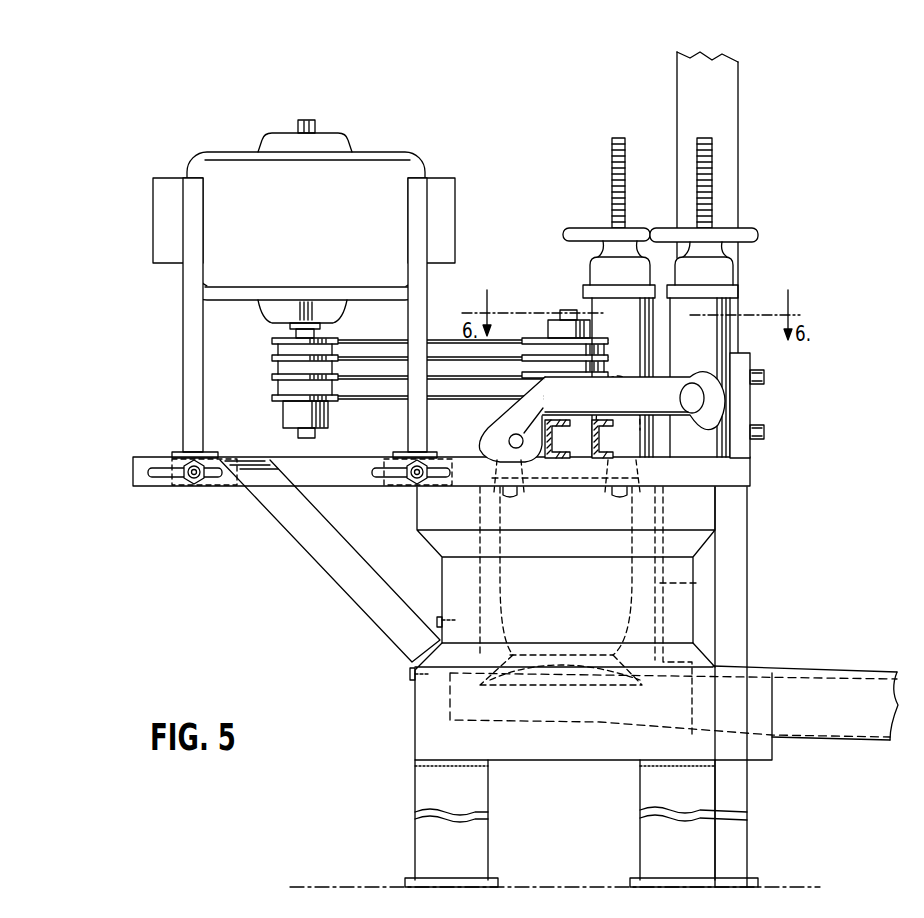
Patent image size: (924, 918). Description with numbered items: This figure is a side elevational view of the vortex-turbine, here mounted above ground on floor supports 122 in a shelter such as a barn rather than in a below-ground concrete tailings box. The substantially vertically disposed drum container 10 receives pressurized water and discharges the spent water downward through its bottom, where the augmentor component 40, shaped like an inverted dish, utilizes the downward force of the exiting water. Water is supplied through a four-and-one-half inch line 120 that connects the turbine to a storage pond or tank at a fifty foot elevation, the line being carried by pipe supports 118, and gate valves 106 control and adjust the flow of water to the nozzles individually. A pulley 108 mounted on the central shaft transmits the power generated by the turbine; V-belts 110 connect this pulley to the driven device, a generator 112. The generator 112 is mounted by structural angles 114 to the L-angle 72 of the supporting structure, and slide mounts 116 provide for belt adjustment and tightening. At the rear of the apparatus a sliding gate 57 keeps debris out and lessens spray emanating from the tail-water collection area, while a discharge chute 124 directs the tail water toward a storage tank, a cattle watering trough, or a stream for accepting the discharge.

The drum container 10 is at (500, 585).
The augmentor component 40 is at (472, 683).
The sliding gate 57 is at (662, 583).
The L-angle 72 is at (146, 460).
The gate valves 106 is at (583, 233).
The pulley 108 is at (540, 337).
The V-belts 110 is at (380, 347).
The generator 112 is at (377, 158).
The structural angles 114 is at (190, 333).
The slide mounts 116 is at (223, 486).
The pipe supports 118 is at (742, 452).
The line 120 is at (730, 143).
The floor supports 122 is at (470, 845).
The discharge chute 124 is at (818, 723).